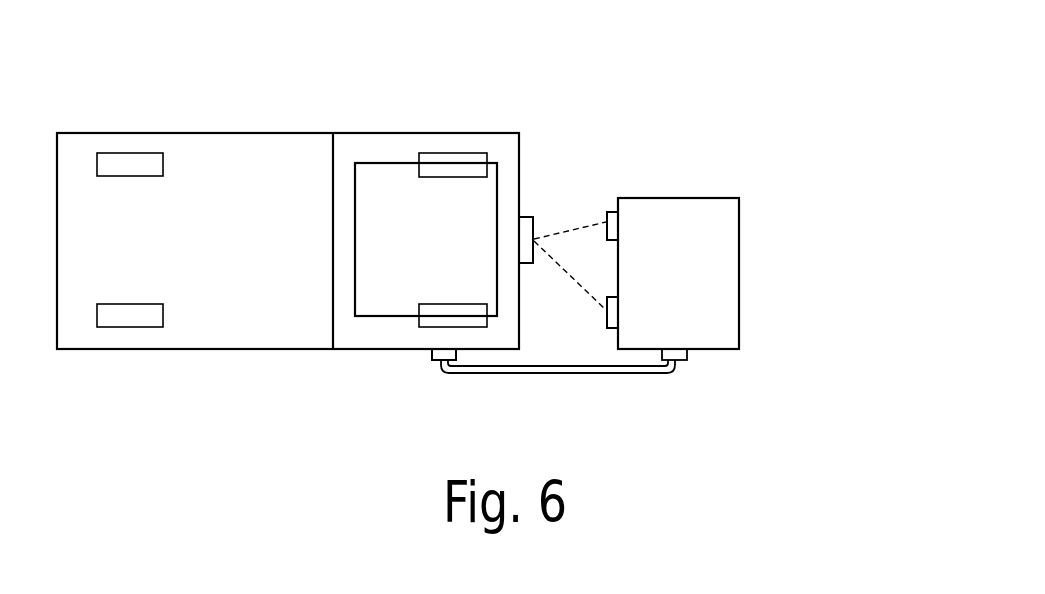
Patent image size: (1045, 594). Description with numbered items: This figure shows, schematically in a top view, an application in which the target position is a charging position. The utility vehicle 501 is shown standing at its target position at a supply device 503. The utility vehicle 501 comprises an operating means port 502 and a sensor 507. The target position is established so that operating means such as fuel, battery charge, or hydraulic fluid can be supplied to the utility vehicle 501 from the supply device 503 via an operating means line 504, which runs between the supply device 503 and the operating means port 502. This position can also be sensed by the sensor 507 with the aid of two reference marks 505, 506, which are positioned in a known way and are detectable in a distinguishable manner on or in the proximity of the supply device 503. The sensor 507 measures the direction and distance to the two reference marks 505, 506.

The utility vehicle 501 is at (273, 257).
The operating means port 502 is at (433, 360).
The supply device 503 is at (711, 287).
The operating means line 504 is at (560, 372).
The reference mark 505 is at (611, 212).
The reference mark 506 is at (609, 328).
The sensor 507 is at (535, 220).